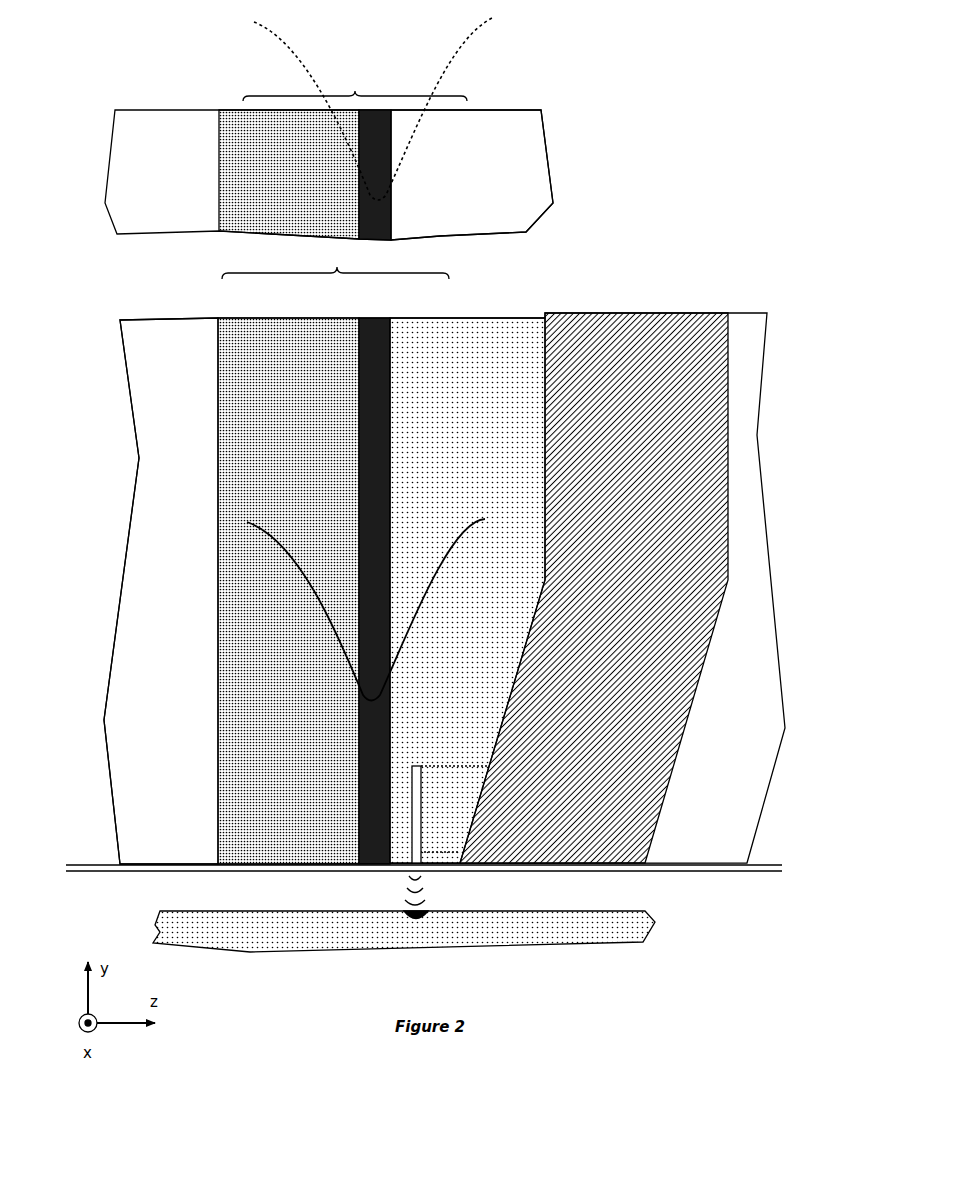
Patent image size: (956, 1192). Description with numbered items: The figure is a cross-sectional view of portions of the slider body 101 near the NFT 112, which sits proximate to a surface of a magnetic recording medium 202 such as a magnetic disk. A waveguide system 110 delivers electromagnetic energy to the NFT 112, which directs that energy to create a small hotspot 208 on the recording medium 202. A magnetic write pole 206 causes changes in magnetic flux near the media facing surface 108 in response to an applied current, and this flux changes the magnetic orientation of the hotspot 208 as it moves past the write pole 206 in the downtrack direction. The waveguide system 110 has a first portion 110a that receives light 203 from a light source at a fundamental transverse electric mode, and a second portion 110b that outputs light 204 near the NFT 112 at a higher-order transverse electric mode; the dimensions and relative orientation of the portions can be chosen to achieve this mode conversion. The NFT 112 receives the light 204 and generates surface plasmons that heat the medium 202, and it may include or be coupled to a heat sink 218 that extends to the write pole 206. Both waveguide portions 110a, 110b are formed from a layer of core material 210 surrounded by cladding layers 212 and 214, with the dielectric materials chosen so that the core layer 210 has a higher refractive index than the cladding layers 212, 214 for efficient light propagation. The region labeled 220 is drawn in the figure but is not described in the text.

The slider body 101 is at (735, 104).
The media facing surface 108 is at (693, 872).
The waveguide system 110 is at (355, 81).
The first portion 110a is at (589, 100).
The second portion 110b is at (186, 320).
The NFT 112 is at (412, 874).
The magnetic recording medium 202 is at (210, 938).
The light 203 is at (340, 143).
The light 204 is at (345, 672).
The magnetic write pole 206 is at (651, 308).
The hotspot 208 is at (417, 922).
The core layer 210 is at (375, 241).
The cladding layer 212 is at (495, 233).
The cladding layer 214 is at (252, 229).
The heat sink 218 is at (458, 862).
The slider substrate 220 is at (166, 840).